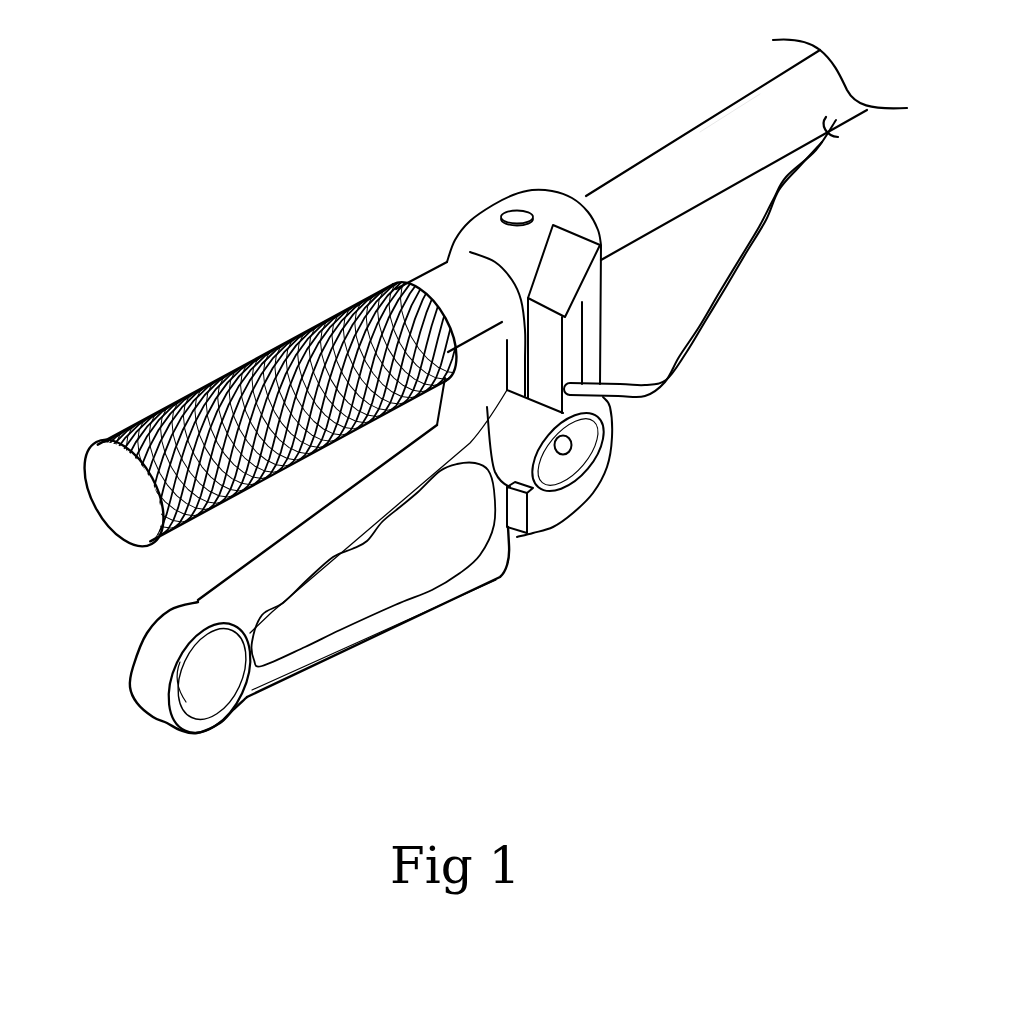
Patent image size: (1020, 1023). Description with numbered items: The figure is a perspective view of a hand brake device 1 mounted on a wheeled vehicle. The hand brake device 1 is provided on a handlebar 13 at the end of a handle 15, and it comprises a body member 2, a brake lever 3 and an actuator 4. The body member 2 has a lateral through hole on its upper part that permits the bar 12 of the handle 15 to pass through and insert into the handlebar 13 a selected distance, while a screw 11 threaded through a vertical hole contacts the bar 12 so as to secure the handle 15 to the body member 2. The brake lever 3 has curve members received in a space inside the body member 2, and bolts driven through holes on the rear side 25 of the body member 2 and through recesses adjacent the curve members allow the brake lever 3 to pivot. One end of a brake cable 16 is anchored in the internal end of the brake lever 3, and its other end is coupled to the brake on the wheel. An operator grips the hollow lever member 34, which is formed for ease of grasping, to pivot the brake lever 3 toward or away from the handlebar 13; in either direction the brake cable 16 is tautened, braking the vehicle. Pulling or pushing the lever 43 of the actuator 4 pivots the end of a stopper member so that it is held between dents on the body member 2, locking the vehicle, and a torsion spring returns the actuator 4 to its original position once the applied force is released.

The hand brake device 1 is at (357, 237).
The body member 2 is at (573, 212).
The brake lever 3 is at (434, 617).
The actuator 4 is at (576, 364).
The screw 11 is at (515, 220).
The bar 12 is at (828, 118).
The handlebar 13 is at (202, 380).
The handle 15 is at (674, 101).
The brake cable 16 is at (706, 336).
The rear side 25 is at (537, 523).
The hollow lever member 34 is at (297, 548).
The lever 43 is at (585, 272).